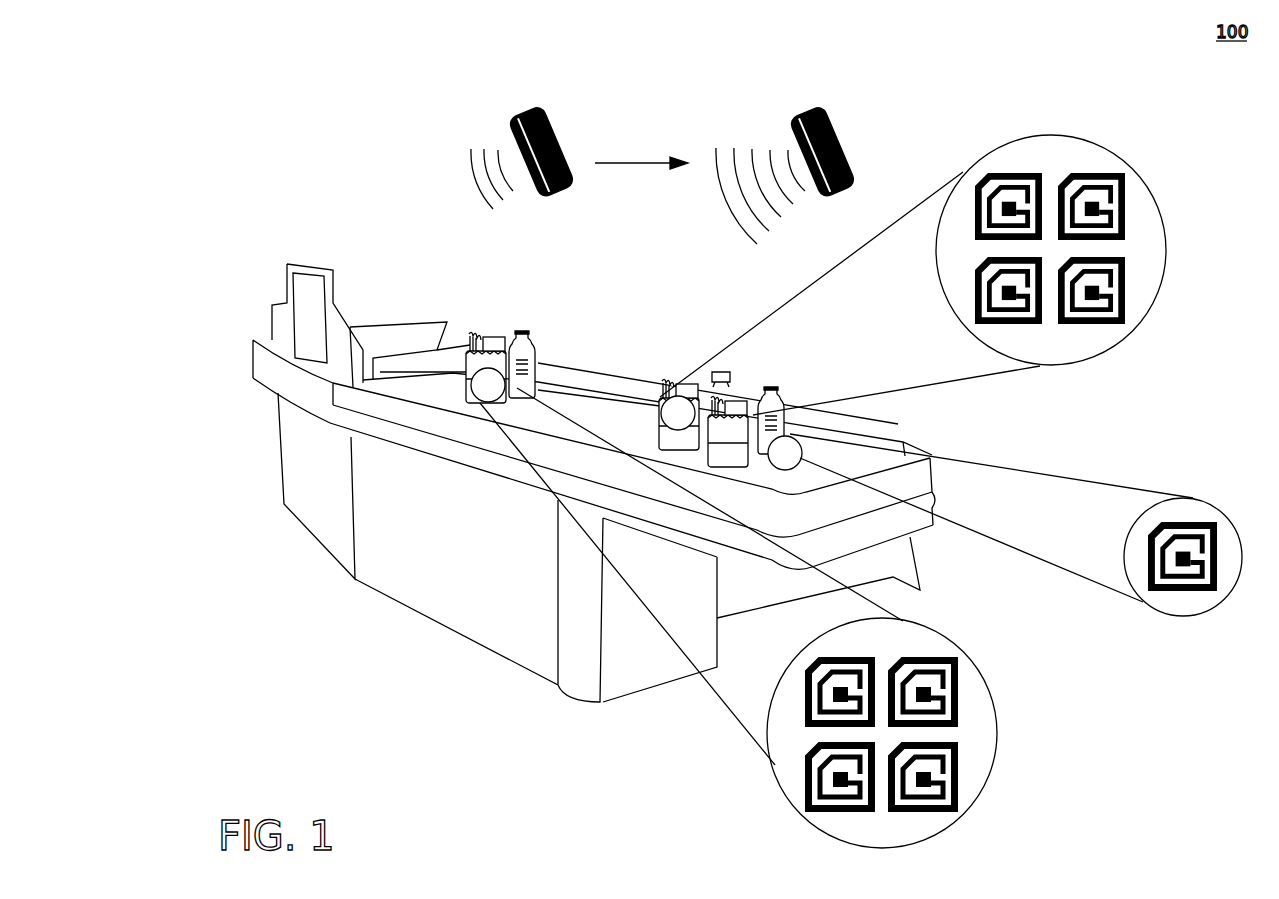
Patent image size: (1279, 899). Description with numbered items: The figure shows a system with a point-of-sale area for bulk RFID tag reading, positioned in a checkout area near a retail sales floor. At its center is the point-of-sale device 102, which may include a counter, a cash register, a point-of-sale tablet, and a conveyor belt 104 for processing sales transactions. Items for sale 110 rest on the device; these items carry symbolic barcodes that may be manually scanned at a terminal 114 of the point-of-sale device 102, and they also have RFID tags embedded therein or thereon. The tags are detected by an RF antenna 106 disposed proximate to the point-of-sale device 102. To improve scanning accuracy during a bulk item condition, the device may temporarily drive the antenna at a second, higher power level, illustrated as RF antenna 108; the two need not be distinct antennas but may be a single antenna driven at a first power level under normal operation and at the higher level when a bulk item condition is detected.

The point-of-sale device 102 is at (258, 363).
The conveyor belt 104 is at (540, 423).
The RF antenna 106 is at (545, 115).
The RF antenna 108 is at (828, 115).
The items for sale 110 is at (533, 350).
The terminal 114 is at (425, 366).